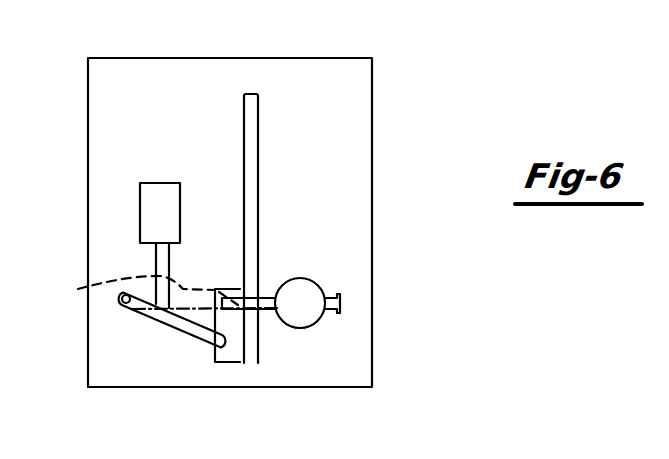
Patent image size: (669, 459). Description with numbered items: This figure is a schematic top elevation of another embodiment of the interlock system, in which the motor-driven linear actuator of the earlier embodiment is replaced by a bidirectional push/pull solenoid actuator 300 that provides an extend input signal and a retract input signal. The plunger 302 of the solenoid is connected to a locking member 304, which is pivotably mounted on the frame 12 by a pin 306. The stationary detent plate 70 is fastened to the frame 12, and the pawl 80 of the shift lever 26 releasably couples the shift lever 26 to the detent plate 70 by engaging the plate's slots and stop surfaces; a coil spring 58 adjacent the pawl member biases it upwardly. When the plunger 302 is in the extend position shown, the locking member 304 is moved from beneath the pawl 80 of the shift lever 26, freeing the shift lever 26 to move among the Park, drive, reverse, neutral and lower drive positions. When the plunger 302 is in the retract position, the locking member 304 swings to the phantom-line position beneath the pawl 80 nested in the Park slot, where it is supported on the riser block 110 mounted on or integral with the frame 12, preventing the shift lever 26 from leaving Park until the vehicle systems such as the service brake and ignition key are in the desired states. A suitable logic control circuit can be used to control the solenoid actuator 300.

The solenoid actuator 300 is at (158, 192).
The plunger 302 is at (157, 257).
The locking member 304 is at (78, 289).
The pin 306 is at (130, 312).
The riser block 110 is at (228, 352).
The pawl 80 is at (228, 300).
The detent plate 70 is at (252, 162).
The frame 12 is at (348, 280).
The coil spring 58 is at (341, 302).
The shift lever 26 is at (300, 328).